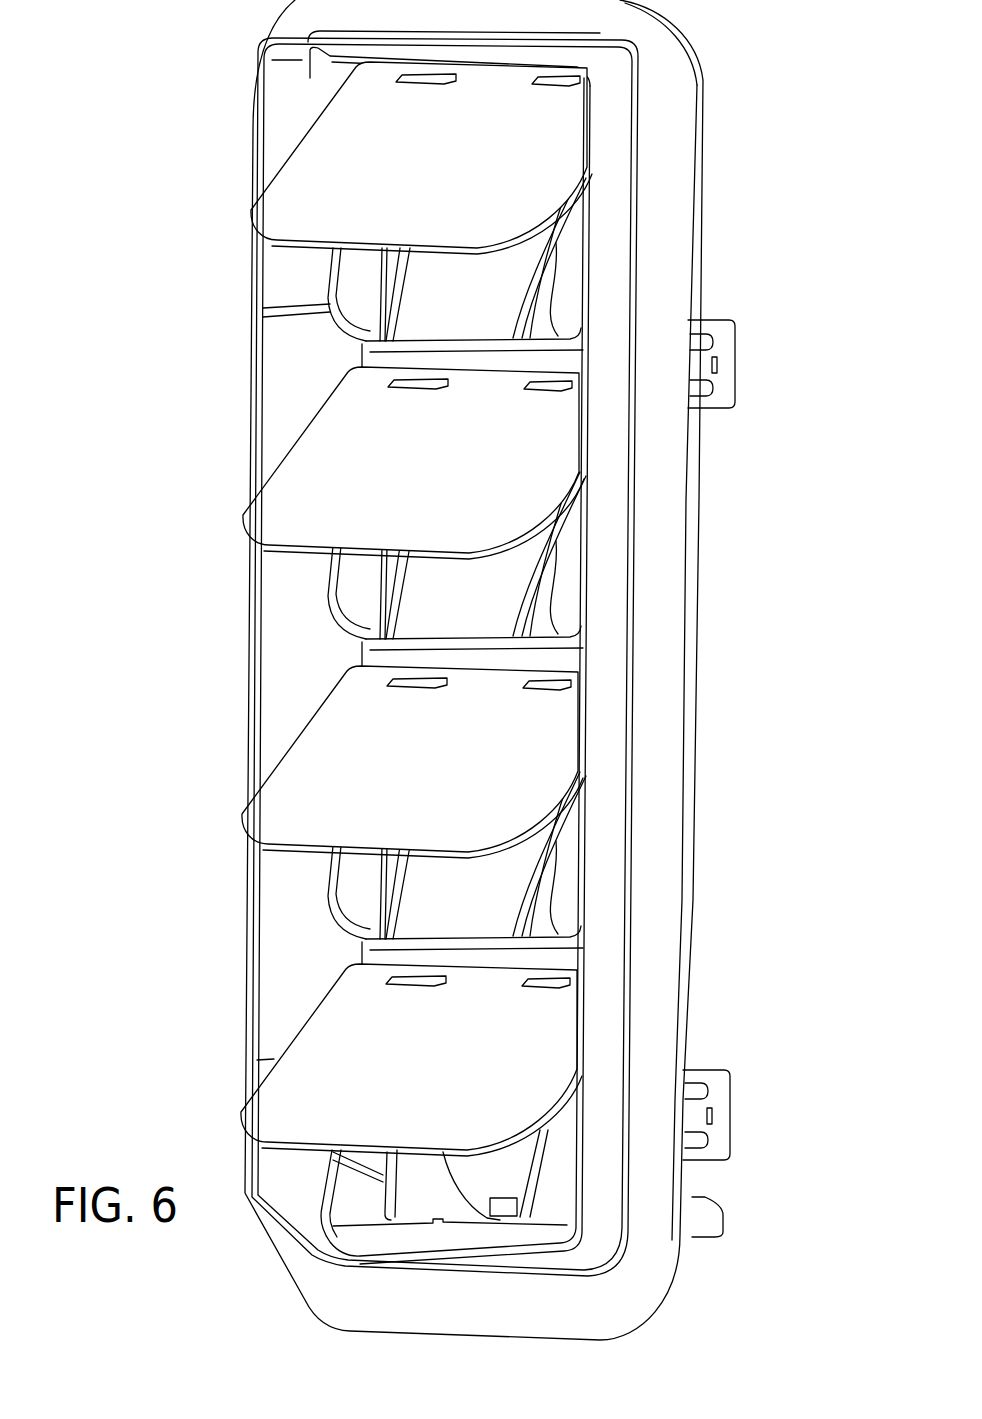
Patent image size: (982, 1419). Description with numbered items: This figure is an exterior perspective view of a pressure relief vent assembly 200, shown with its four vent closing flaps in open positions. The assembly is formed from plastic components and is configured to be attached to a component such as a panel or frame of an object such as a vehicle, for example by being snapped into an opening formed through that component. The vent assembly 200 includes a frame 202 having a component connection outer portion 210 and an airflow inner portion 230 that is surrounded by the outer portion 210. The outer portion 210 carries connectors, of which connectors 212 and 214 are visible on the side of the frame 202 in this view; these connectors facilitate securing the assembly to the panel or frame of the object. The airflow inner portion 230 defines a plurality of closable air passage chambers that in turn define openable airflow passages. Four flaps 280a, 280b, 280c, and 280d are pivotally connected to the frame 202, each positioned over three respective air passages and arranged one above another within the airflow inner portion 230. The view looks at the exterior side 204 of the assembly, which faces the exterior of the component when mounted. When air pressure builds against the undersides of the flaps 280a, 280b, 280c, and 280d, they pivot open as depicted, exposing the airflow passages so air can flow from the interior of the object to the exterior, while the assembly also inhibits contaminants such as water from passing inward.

The pressure relief vent assembly 200 is at (211, 1318).
The frame 202 is at (695, 928).
The exterior side 204 is at (567, 125).
The component connection outer portion 210 is at (698, 460).
The connector 212 is at (734, 1115).
The connector 214 is at (736, 362).
The airflow inner portion 230 is at (610, 189).
The flap 280a is at (291, 1042).
The flap 280b is at (293, 740).
The flap 280c is at (293, 440).
The flap 280d is at (300, 141).